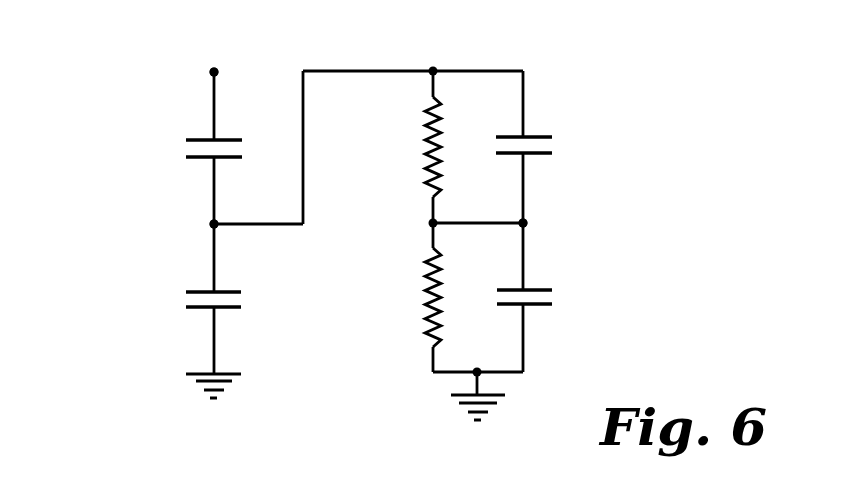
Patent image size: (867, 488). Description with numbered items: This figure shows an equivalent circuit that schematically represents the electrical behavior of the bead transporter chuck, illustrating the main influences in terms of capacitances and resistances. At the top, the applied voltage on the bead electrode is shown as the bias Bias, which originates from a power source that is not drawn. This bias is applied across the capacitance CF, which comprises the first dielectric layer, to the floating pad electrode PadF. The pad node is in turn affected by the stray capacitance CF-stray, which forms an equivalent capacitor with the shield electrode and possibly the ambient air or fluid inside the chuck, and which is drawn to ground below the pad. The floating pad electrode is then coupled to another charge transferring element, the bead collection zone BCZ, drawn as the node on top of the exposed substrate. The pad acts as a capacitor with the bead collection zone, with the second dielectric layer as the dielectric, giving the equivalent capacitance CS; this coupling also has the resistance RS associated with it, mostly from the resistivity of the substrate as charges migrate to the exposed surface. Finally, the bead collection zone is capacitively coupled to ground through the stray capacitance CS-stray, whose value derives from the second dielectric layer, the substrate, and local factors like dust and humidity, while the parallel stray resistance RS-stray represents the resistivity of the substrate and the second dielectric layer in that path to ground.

The bias voltage Bias is at (216, 46).
The capacitance CF is at (182, 150).
The floating pad electrode PadF is at (193, 222).
The stray capacitance CF-stray is at (132, 296).
The resistance RS is at (404, 147).
The stray resistance RS-stray is at (361, 297).
The equivalent capacitance CS is at (553, 157).
The stray capacitance CS-stray is at (604, 307).
The bead collection zone BCZ is at (536, 221).